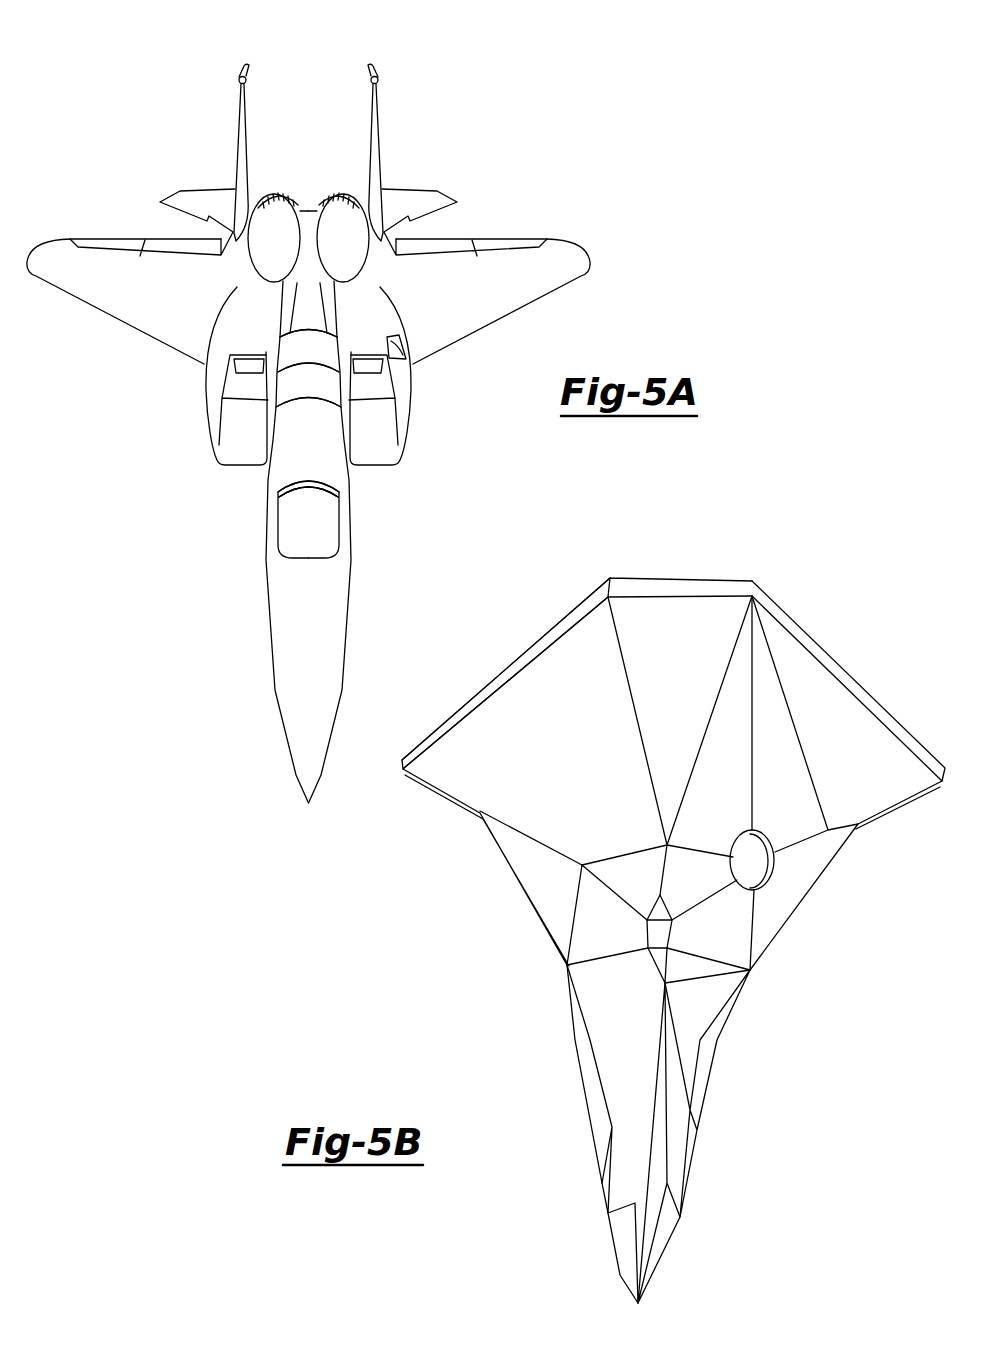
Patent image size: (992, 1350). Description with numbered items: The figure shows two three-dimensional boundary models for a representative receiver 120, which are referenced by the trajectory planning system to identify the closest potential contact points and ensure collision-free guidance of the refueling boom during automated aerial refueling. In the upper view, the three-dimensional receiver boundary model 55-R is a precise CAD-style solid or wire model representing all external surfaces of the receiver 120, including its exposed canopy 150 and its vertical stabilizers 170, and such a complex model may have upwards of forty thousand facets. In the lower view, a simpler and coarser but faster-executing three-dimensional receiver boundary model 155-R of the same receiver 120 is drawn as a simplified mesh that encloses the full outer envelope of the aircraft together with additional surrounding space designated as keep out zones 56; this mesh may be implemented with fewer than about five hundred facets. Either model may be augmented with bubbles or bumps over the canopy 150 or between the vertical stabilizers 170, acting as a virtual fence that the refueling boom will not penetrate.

In FIG. 5A, the receiver 120 is at (497, 142).
In FIG. 5A, the vertical stabilizers 170 is at (238, 69).
In FIG. 5A, the 3D receiver boundary model 55-R is at (133, 179).
In FIG. 5A, the canopy 150 is at (300, 519).
In FIG. 5B, the 3D receiver boundary model 155-R is at (838, 980).
In FIG. 5B, the keep out zones 56 is at (545, 733).